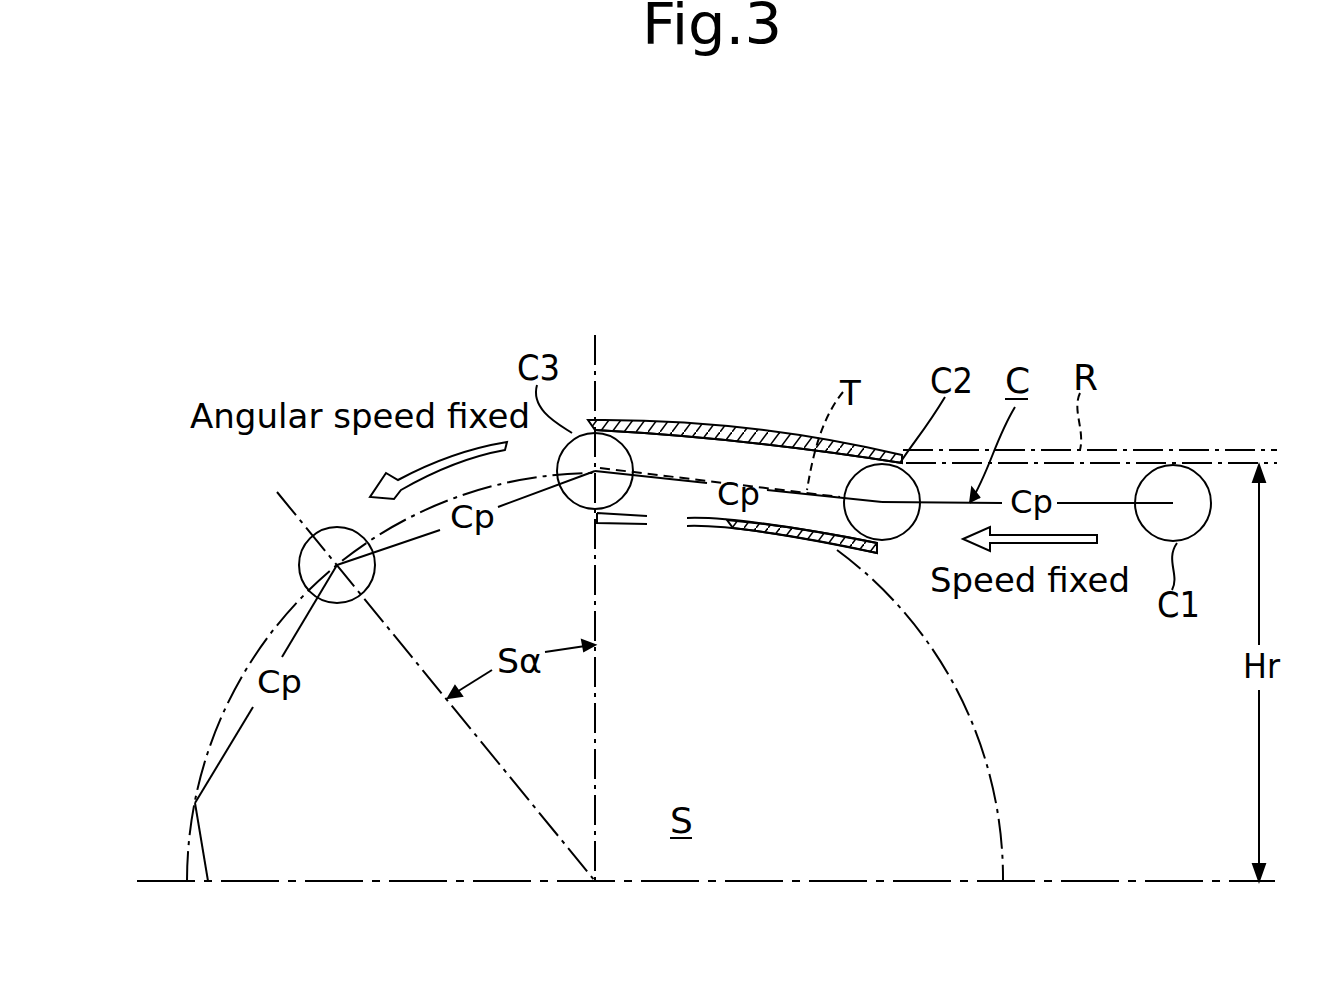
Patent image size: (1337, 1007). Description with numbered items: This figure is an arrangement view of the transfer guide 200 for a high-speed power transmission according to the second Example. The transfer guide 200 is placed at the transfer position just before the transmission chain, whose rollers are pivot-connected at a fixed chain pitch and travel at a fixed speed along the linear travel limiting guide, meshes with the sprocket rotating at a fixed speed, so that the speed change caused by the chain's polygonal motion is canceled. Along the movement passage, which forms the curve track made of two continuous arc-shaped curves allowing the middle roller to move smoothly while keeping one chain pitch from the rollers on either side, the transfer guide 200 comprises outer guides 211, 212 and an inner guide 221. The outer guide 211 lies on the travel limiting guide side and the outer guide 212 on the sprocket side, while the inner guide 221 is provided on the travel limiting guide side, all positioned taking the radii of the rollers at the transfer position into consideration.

The transfer guide for a high-speed power transmission 200 is at (746, 459).
The outer guide provided on a travel limiting guide R side 211 is at (782, 432).
The outer guide provided on a sprocket S side 212 is at (653, 418).
The inner guide provided on the travel limiting guide R side 221 is at (795, 555).